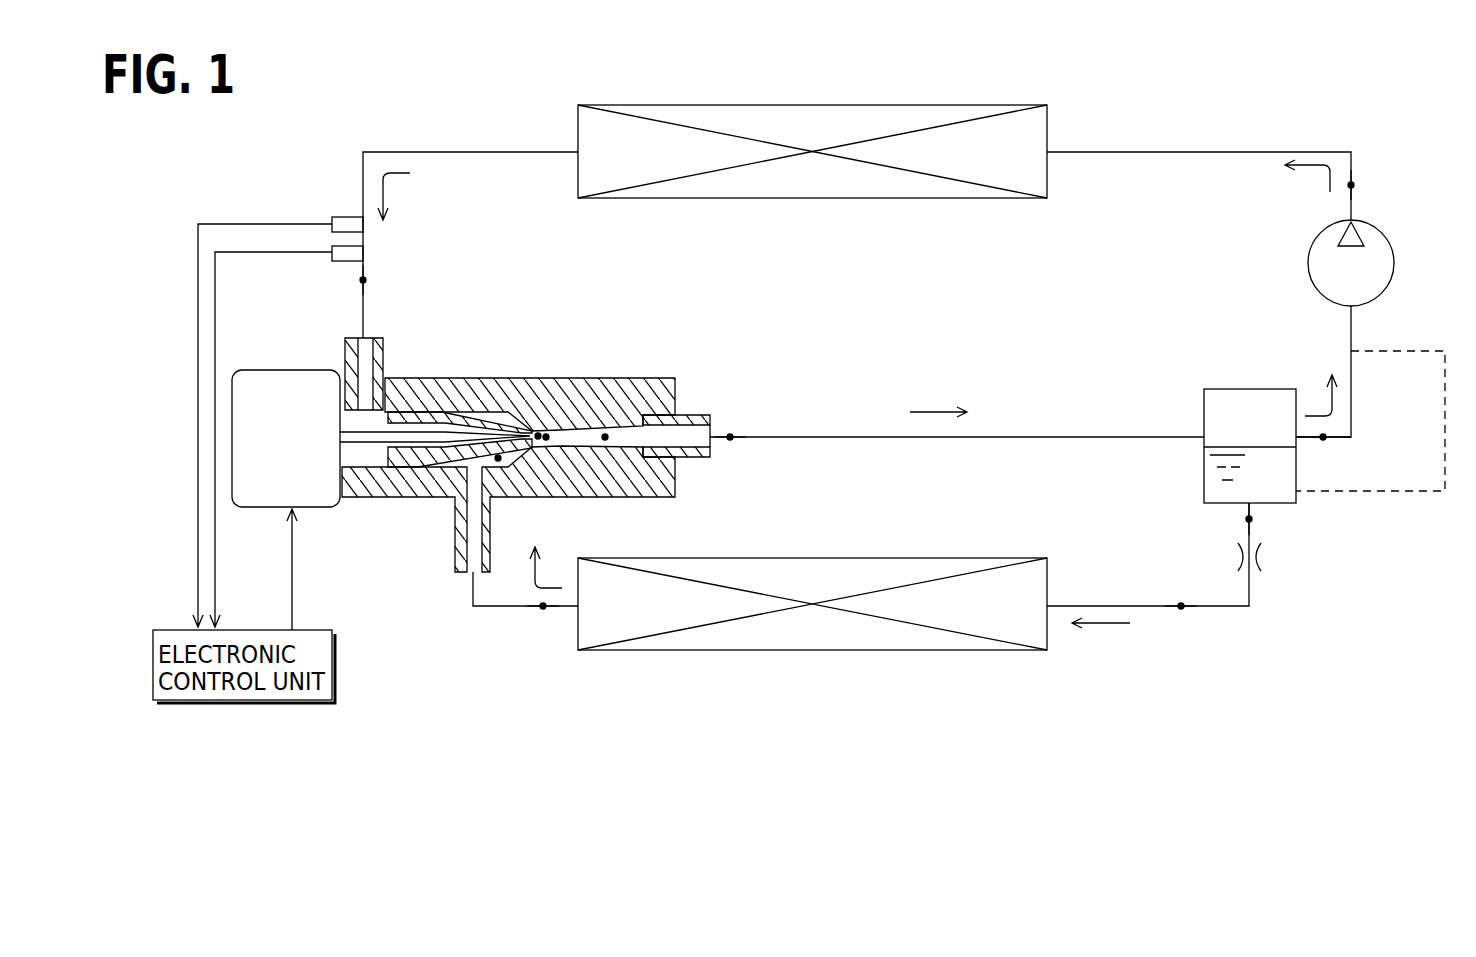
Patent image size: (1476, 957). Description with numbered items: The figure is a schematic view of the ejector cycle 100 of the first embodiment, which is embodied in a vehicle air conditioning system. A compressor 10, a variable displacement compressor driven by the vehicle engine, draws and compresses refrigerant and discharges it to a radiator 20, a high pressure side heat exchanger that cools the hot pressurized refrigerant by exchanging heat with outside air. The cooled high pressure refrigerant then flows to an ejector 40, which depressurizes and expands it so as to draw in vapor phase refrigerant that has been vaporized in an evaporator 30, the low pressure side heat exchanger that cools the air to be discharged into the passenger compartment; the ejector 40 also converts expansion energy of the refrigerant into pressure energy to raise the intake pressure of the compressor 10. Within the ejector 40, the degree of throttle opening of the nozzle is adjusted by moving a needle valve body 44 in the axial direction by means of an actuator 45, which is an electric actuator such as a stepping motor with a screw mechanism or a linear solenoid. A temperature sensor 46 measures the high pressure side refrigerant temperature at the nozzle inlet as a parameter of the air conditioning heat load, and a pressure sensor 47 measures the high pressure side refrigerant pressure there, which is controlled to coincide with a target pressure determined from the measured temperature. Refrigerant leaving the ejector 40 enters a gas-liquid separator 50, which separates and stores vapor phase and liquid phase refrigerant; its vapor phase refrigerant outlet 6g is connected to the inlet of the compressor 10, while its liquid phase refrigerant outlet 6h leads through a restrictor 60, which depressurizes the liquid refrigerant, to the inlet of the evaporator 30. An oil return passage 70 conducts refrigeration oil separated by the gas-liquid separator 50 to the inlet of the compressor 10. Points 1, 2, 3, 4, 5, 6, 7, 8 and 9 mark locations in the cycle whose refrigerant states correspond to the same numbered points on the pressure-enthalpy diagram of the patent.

The ejector cycle 100 is at (525, 113).
The radiator 20 is at (960, 104).
The evaporator 30 is at (990, 558).
The compressor 10 is at (1394, 263).
The refrigerant state point 1 is at (1351, 185).
The refrigerant state point 2 is at (363, 280).
The oil return passage 70 is at (1395, 350).
The gas-liquid separator 50 is at (1296, 470).
The vapor phase refrigerant outlet 6g is at (1323, 437).
The liquid phase refrigerant outlet 6h is at (1249, 519).
The restrictor 60 is at (1262, 557).
The refrigerant state point 7 is at (1181, 610).
The refrigerant state point 8 is at (543, 610).
The refrigerant state point 6 is at (730, 440).
The ejector 40 is at (601, 364).
The needle valve body 44 is at (418, 458).
The refrigerant state point 3 is at (538, 433).
The refrigerant state point 4 is at (546, 440).
The refrigerant state point 5 is at (605, 440).
The refrigerant state point 9 is at (498, 462).
The actuator 45 is at (302, 355).
The temperature sensor 46 is at (348, 217).
The pressure sensor 47 is at (332, 250).